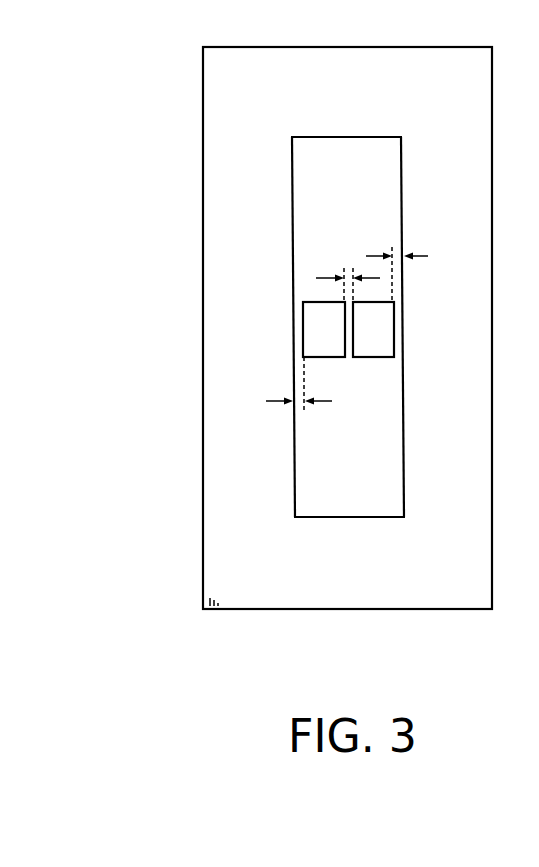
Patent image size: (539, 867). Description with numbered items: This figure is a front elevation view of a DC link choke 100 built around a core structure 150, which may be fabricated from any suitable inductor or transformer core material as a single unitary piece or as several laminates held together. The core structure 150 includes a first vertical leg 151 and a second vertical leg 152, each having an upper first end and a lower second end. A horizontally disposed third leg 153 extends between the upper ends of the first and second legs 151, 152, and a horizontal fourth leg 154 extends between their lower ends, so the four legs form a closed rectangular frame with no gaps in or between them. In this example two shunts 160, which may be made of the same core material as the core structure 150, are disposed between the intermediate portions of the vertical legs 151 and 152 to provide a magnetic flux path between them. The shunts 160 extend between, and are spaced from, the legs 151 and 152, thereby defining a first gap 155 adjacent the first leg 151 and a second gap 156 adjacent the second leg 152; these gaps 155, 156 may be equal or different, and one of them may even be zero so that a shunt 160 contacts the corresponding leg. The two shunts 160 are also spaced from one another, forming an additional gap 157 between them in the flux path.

The DC choke 100 is at (117, 43).
The core structure 150 is at (203, 88).
The first vertical leg 151 is at (261, 259).
The second vertical leg 152 is at (461, 439).
The third leg 153 is at (360, 104).
The fourth leg 154 is at (363, 574).
The first gap 155 is at (277, 398).
The second gap 156 is at (421, 256).
The additional gap 157 is at (323, 278).
The shunt 160 is at (303, 323).